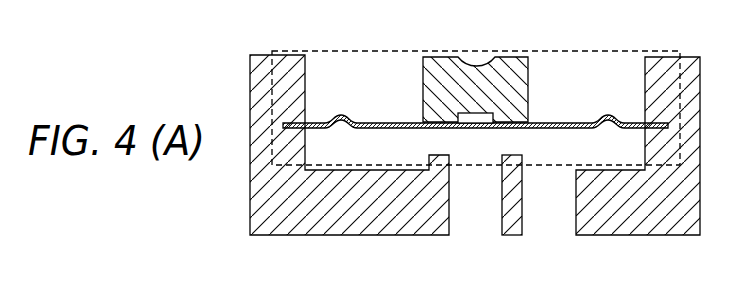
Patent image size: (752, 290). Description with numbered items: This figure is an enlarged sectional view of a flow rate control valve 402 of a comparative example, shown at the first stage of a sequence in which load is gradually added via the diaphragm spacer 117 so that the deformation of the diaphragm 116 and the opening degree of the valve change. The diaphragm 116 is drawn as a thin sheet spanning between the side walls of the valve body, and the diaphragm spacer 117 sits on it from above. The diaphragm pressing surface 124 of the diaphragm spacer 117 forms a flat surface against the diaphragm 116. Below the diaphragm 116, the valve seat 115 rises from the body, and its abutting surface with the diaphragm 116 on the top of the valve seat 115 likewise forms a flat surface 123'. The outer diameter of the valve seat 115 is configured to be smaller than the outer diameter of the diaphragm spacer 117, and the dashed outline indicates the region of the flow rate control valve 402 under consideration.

The valve seat 115 is at (509, 160).
The diaphragm 116 is at (379, 121).
The diaphragm spacer 117 is at (516, 83).
The flat surface 123' is at (547, 158).
The diaphragm pressing surface 124 is at (443, 122).
The flow rate control valve 402 is at (607, 50).